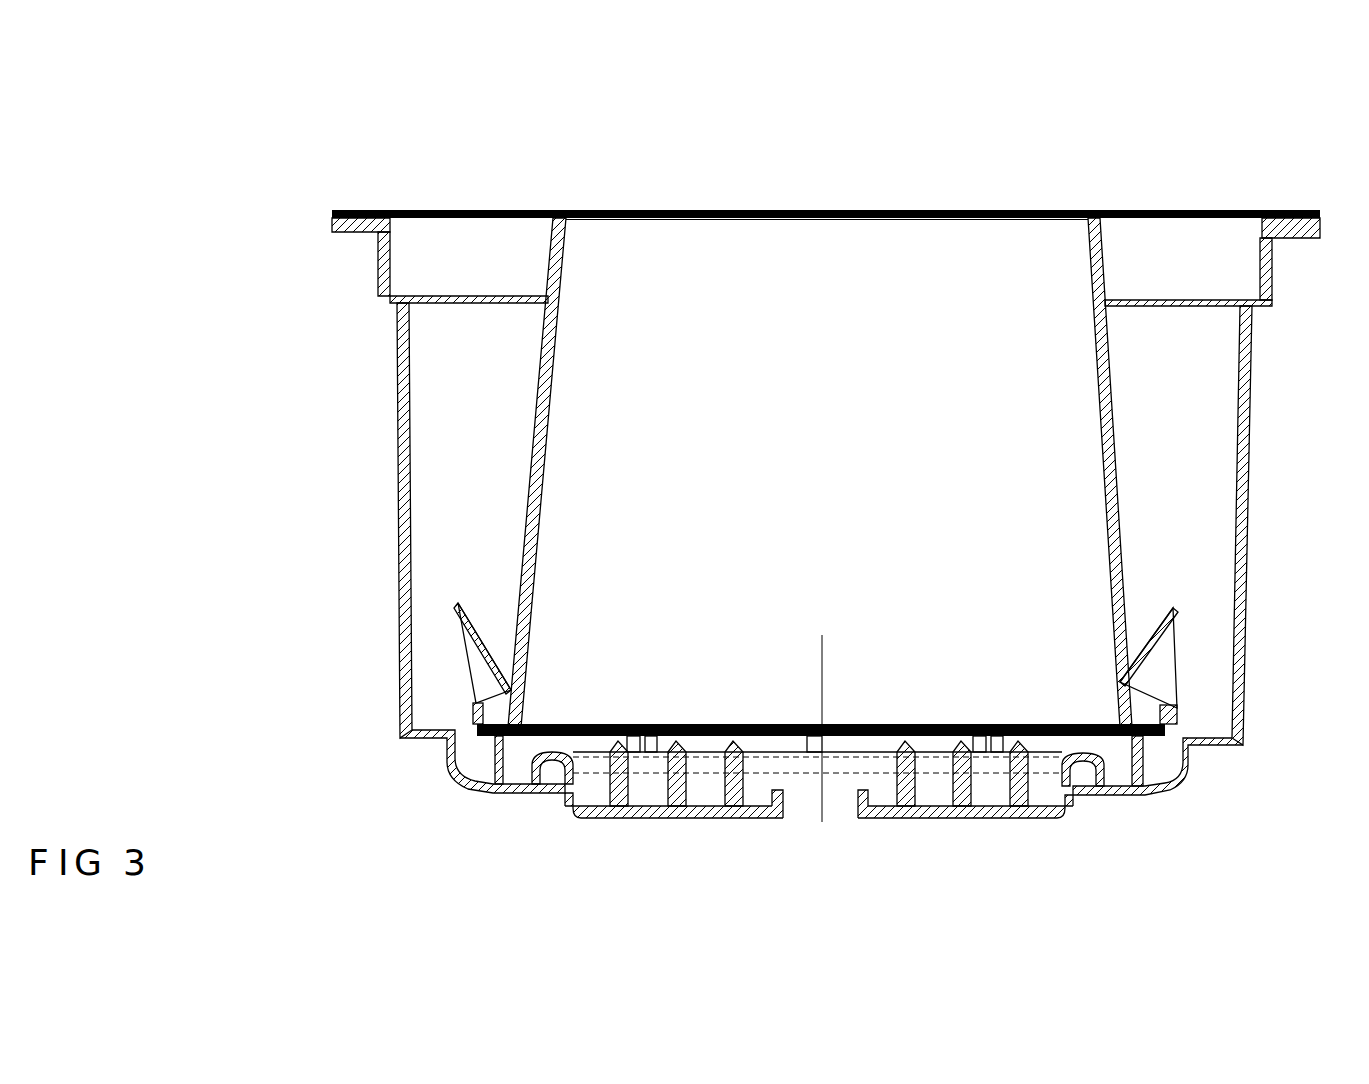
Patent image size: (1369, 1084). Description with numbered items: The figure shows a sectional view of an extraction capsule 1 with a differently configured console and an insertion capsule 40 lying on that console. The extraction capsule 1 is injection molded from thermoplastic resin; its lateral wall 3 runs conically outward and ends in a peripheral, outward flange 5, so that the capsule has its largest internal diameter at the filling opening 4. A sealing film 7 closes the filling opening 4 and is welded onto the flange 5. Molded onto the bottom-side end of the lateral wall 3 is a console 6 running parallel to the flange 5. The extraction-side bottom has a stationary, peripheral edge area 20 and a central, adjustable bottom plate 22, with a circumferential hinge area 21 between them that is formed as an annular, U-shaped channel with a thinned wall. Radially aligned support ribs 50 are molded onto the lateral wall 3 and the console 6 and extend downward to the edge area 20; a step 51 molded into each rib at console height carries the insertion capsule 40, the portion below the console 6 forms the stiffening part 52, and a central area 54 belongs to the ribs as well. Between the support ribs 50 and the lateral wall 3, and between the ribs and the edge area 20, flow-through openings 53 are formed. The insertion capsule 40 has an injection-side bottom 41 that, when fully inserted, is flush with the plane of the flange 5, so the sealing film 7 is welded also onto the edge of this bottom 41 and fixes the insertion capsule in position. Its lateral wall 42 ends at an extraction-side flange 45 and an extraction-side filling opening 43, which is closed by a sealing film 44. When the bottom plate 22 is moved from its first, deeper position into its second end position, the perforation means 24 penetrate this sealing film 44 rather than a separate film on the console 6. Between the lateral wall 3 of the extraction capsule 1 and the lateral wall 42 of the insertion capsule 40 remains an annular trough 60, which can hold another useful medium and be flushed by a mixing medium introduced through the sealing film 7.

The extraction capsule 1 is at (338, 354).
The lateral wall 3 is at (1252, 477).
The filling opening 4 is at (433, 187).
The flange 5 is at (1306, 220).
The console 6 is at (1222, 748).
The sealing film 7 is at (497, 212).
The stationary peripheral edge area 20 is at (1152, 795).
The circumferential hinge area 21 is at (1083, 798).
The bottom plate 22 is at (990, 810).
The perforation means 24 is at (718, 752).
The insertion capsule 40 is at (1132, 339).
The injection-side bottom 41 is at (678, 214).
The lateral wall of insertion capsule 42 is at (1118, 478).
The extraction-side filling opening 43 is at (716, 656).
The sealing film of extraction-side filling opening 44 is at (930, 727).
The extraction-side flange 45 is at (1170, 712).
The support ribs 50 is at (470, 655).
The molded step 51 is at (455, 716).
The stiffening part of support ribs 52 is at (1170, 778).
The flow-through openings 53 is at (448, 734).
The central area of support ribs 54 is at (1175, 690).
The annular trough 60 is at (496, 378).